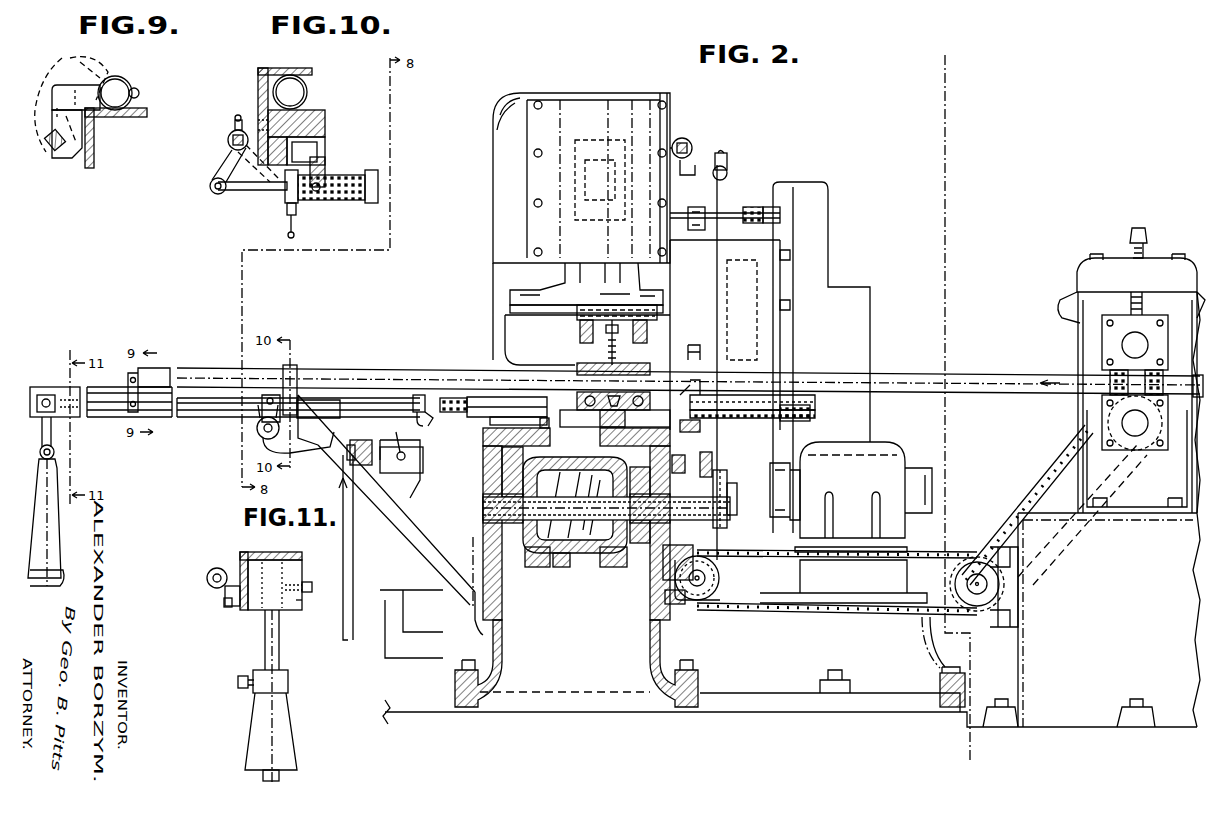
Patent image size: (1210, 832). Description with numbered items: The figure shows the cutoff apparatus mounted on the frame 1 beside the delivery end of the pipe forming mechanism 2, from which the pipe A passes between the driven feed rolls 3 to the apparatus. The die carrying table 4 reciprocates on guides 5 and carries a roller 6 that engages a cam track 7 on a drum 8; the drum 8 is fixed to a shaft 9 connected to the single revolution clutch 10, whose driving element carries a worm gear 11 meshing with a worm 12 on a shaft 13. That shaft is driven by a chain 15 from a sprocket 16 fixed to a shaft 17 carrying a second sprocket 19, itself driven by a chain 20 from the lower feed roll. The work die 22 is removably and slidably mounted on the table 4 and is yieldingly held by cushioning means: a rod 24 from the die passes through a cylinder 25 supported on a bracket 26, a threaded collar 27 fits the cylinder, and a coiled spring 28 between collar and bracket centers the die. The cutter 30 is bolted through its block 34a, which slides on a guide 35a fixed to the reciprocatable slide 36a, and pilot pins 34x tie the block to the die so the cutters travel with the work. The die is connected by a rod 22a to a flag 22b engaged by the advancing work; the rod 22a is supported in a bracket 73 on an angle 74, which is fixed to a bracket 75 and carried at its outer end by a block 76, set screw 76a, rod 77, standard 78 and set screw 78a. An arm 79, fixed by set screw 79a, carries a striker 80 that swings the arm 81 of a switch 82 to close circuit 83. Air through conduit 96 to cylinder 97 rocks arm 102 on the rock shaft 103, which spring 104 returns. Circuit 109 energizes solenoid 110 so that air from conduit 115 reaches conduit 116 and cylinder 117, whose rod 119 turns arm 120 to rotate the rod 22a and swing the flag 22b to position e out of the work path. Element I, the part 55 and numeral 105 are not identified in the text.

In FIG. 2, the frame 1 is at (790, 695).
In FIG. 2, the tube or pipe forming mechanism 2 is at (1091, 509).
In FIG. 2, the driven feed rolls 3 is at (1078, 325).
In FIG. 2, the die carrying table 4 is at (540, 447).
In FIG. 2, the guides 5 is at (485, 437).
In FIG. 2, the roller 6 is at (606, 508).
In FIG. 2, the cam track 7 is at (548, 562).
In FIG. 2, the drum 8 is at (603, 562).
In FIG. 2, the shaft 9 is at (485, 496).
In FIG. 2, the single revolution clutch 10 is at (650, 578).
In FIG. 2, the worm gear 11 is at (708, 467).
In FIG. 2, the coupling I is at (727, 490).
In FIG. 2, the worm 12 is at (690, 616).
In FIG. 2, the shaft 13 is at (705, 602).
In FIG. 2, the chain 15 is at (762, 612).
In FIG. 2, the sprocket 16 is at (575, 505).
In FIG. 2, the shaft 17 is at (956, 638).
In FIG. 2, the second sprocket 19 is at (980, 612).
In FIG. 2, the chain 20 is at (1060, 463).
In FIG. 2, the work die 22 is at (585, 367).
In FIG. 9, the rod 22a is at (62, 152).
In FIG. 10, the rod 22a is at (232, 134).
In FIG. 11, the rod 22a is at (212, 588).
In FIG. 2, the rod 22a is at (178, 406).
In FIG. 9, the flag 22b is at (137, 96).
In FIG. 2, the flag 22b is at (135, 371).
In FIG. 2, the rod 24 is at (688, 383).
In FIG. 2, the cylinder 25 is at (470, 396).
In FIG. 2, the bracket 26 is at (490, 425).
In FIG. 2, the collar 27 is at (820, 415).
In FIG. 2, the coiled spring 28 is at (790, 400).
In FIG. 2, the cutter 30 is at (613, 359).
In FIG. 2, the block 34a is at (656, 319).
In FIG. 2, the pilot pins 34x is at (582, 332).
In FIG. 2, the guide 35a is at (544, 311).
In FIG. 2, the reciprocatable slide 36a is at (518, 293).
In FIG. 2, the motor 55 is at (892, 456).
In FIG. 11, the bracket 73 is at (229, 560).
In FIG. 2, the bracket 73 is at (48, 391).
In FIG. 9, the angle 74 is at (118, 118).
In FIG. 10, the angle 74 is at (323, 113).
In FIG. 11, the angle 74 is at (275, 552).
In FIG. 2, the angle 74 is at (206, 418).
In FIG. 2, the bracket 75 is at (450, 510).
In FIG. 11, the block 76 is at (299, 606).
In FIG. 11, the set screw 76a is at (312, 582).
In FIG. 11, the rod 77 is at (280, 650).
In FIG. 2, the rod 77 is at (56, 435).
In FIG. 11, the standard 78 is at (288, 738).
In FIG. 2, the standard 78 is at (55, 541).
In FIG. 11, the set screw 78a is at (246, 678).
In FIG. 2, the arm 79 is at (415, 393).
In FIG. 2, the set screw 79a is at (446, 396).
In FIG. 2, the striker 80 is at (429, 427).
In FIG. 2, the arm 81 is at (405, 444).
In FIG. 2, the electric switch 82 is at (423, 461).
In FIG. 2, the electric circuit 83 is at (413, 608).
In FIG. 2, the conduit 96 is at (715, 253).
In FIG. 2, the cylinder 97 is at (690, 140).
In FIG. 2, the arm 102 is at (687, 210).
In FIG. 2, the rock shaft 103 is at (750, 209).
In FIG. 2, the coil spring 104 is at (760, 226).
In FIG. 2, the knob 105 is at (728, 173).
In FIG. 2, the electric circuit 109 is at (356, 578).
In FIG. 2, the solenoid 110 is at (369, 440).
In FIG. 2, the conduit 115 is at (397, 624).
In FIG. 10, the conduit 116 is at (294, 222).
In FIG. 10, the cylinder 117 is at (341, 176).
In FIG. 2, the cylinder 117 is at (258, 441).
In FIG. 10, the rod 119 is at (240, 192).
In FIG. 10, the arm 120 is at (219, 166).
In FIG. 2, the arm 120 is at (256, 429).
In FIG. 10, the pipe A is at (316, 84).
In FIG. 2, the pipe A is at (398, 370).
In FIG. 9, the swung flag position e is at (64, 60).